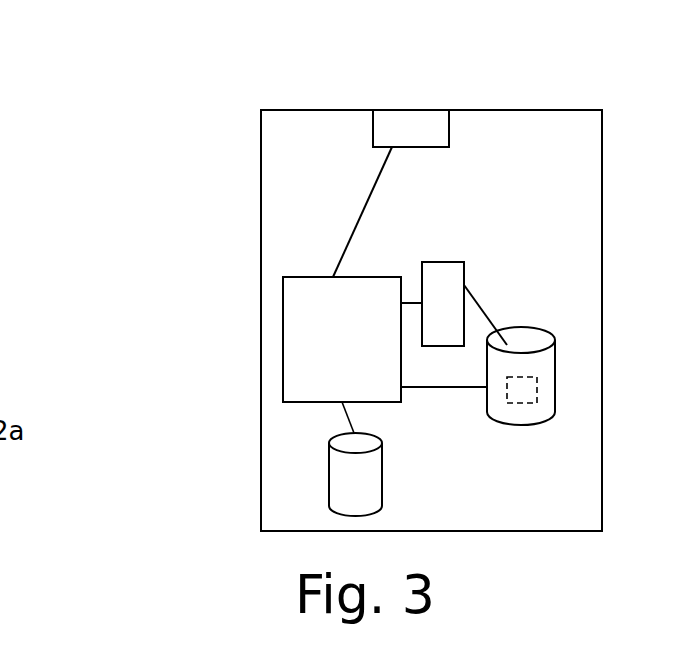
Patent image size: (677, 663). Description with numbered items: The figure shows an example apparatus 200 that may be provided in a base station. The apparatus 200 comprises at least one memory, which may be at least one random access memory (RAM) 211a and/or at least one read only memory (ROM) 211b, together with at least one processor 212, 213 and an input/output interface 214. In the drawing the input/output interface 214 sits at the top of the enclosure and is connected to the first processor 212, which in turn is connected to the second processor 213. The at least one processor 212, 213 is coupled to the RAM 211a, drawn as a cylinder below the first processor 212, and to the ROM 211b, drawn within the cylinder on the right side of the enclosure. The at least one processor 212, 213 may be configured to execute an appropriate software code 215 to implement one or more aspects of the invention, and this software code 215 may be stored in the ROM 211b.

The apparatus 200 is at (244, 104).
The input/output interface 214 is at (417, 128).
The processor 213 is at (435, 282).
The processor 212 is at (283, 366).
The random access memory (RAM) 211a is at (329, 472).
The software code 215 is at (533, 368).
The read only memory (ROM) 211b is at (522, 405).